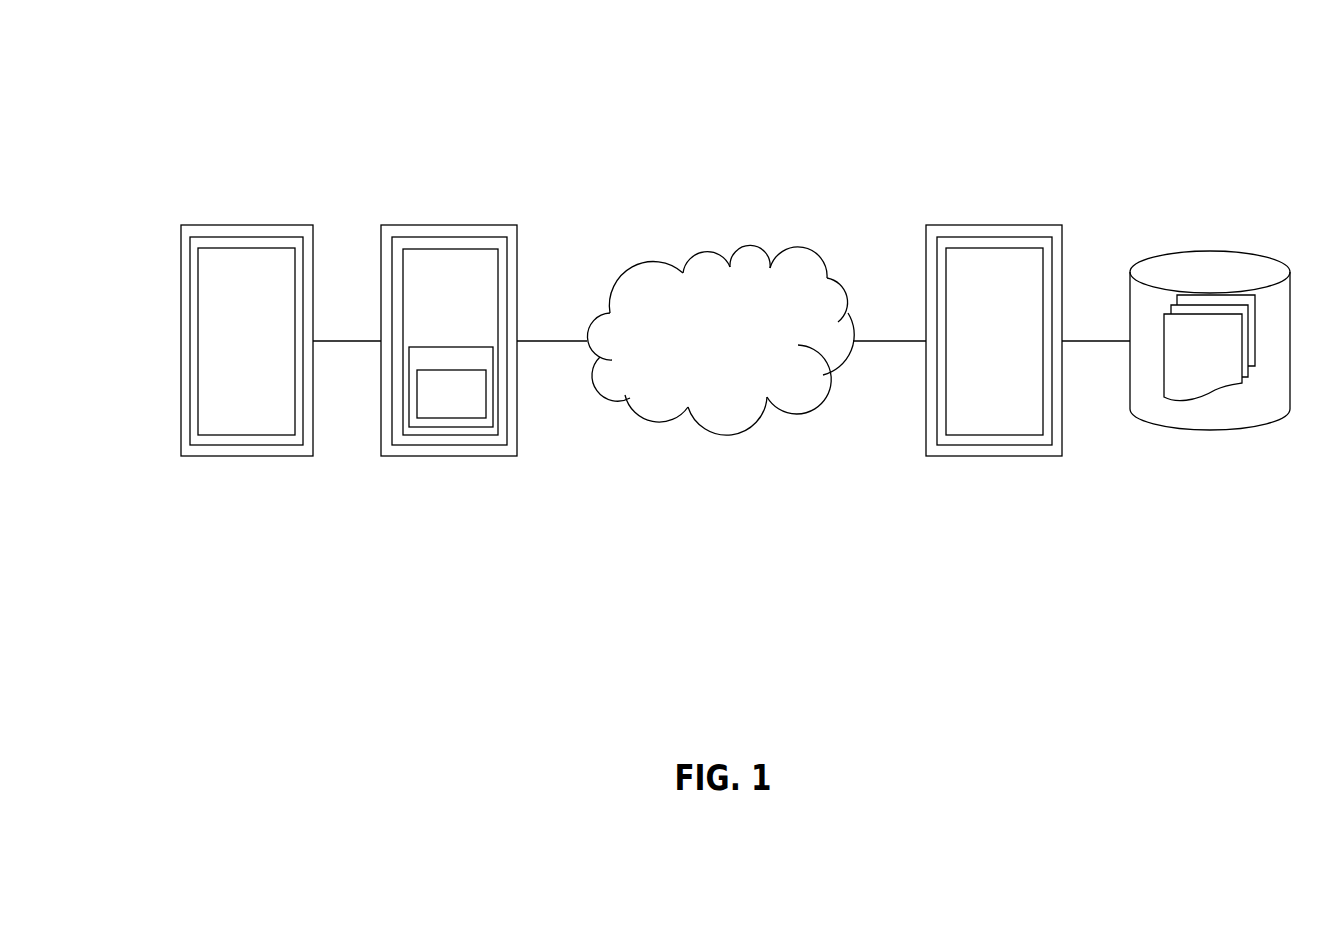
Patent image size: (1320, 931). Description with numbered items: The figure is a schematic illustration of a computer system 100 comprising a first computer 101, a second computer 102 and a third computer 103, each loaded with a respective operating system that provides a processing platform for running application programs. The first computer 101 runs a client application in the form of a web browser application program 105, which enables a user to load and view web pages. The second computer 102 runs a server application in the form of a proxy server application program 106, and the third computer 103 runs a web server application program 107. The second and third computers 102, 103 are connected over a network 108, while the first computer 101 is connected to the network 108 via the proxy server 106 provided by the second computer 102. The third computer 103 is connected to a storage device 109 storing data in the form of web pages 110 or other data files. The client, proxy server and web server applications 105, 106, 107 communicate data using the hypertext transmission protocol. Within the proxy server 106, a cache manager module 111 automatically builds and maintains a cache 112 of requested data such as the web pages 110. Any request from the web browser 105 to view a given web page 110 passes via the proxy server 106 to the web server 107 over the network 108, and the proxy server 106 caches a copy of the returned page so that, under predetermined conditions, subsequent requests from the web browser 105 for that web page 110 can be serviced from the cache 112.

The computer system 100 is at (604, 99).
The first computer 101 is at (247, 329).
The second computer 102 is at (461, 329).
The third computer 103 is at (994, 329).
The web browser application program 105 is at (245, 435).
The proxy server application program 106 is at (427, 436).
The web server application program 107 is at (995, 435).
The network 108 is at (746, 246).
The storage device 109 is at (1210, 337).
The web pages 110 is at (1203, 396).
The cache manager module 111 is at (480, 427).
The cache 112 is at (448, 418).